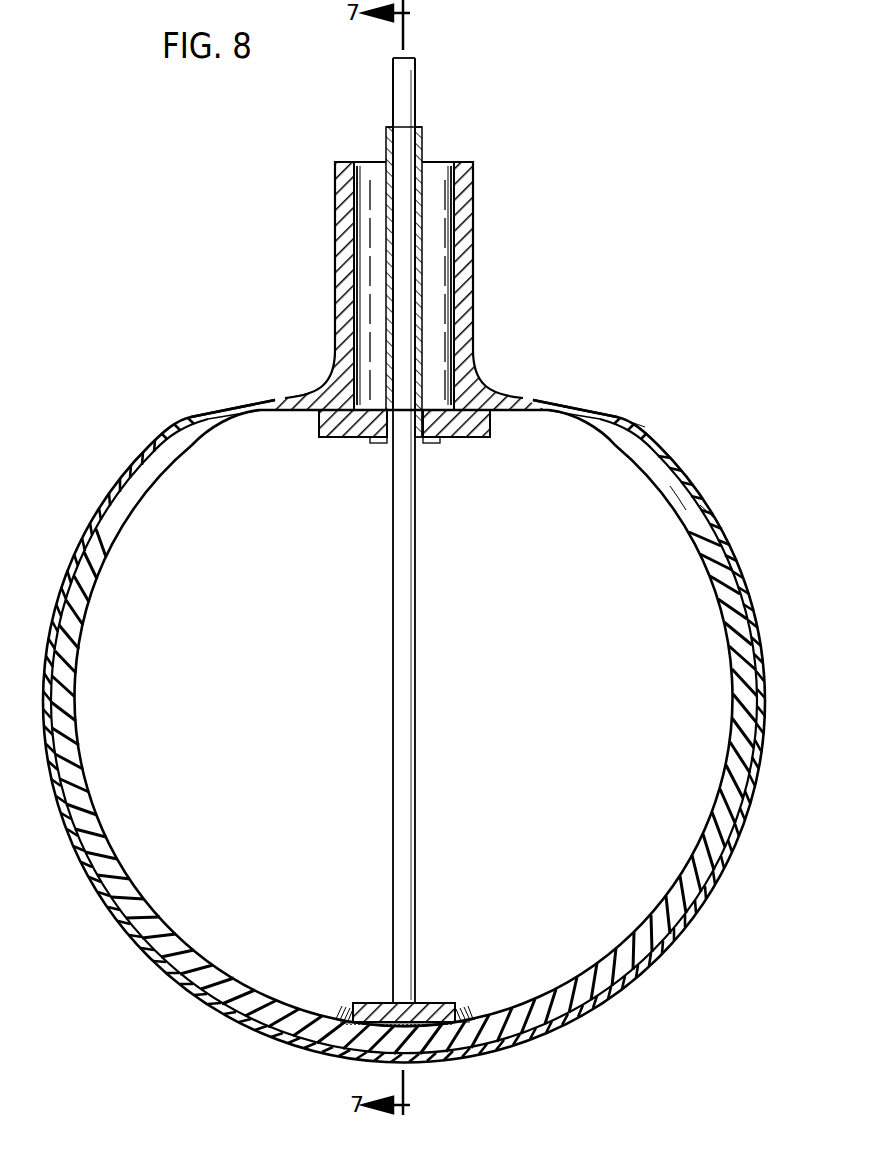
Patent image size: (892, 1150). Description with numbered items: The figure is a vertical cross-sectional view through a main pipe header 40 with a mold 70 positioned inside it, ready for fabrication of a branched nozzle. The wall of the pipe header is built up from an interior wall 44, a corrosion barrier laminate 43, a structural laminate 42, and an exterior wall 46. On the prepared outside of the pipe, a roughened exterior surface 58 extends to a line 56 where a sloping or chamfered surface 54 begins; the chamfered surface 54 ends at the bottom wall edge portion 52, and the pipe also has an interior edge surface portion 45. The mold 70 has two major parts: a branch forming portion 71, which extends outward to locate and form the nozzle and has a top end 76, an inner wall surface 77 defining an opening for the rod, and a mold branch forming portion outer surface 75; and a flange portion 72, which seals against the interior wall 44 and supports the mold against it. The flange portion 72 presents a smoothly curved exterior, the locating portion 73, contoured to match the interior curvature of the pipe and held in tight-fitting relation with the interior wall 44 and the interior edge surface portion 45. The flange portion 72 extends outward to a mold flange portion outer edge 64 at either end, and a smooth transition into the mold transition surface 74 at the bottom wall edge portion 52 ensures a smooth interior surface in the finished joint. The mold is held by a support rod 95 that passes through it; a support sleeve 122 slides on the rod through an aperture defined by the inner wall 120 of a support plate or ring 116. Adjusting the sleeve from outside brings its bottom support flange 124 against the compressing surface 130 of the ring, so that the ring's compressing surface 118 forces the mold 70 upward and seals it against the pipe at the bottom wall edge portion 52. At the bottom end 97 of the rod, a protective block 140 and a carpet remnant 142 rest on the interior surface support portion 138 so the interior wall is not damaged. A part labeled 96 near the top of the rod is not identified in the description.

The main pipe header 40 is at (705, 481).
The structural laminate 42 is at (712, 516).
The corrosion barrier laminate 43 is at (678, 513).
The interior wall 44 is at (690, 540).
The interior edge surface portion 45 is at (540, 414).
The exterior wall 46 is at (717, 530).
The bottom wall edge portion 52 is at (578, 408).
The chamfered surface 54 is at (585, 408).
The line 56 is at (617, 413).
The roughened exterior surface 58 is at (630, 418).
The mold flange portion outer edge 64 is at (551, 414).
The mold 70 is at (322, 242).
The branch forming portion 71 is at (345, 270).
The flange portion 72 is at (284, 412).
The locating portion 73 is at (268, 402).
The mold transition surface 74 is at (322, 375).
The mold branch forming portion outer surface 75 is at (350, 312).
The top end 76 is at (343, 160).
The inner wall surface 77 is at (337, 316).
The support rod 95 is at (413, 647).
The rod upper end 96 is at (395, 67).
The bottom end 97 is at (398, 992).
The support plate or ring 116 is at (487, 416).
The compressing surface 118 is at (498, 416).
The inner wall 120 is at (416, 430).
The support sleeve 122 is at (387, 133).
The bottom support flange 124 is at (430, 440).
The compressing surface 130 is at (377, 440).
The interior surface support portion 138 is at (320, 1015).
The protective block 140 is at (452, 1003).
The carpet remnant 142 is at (470, 1013).